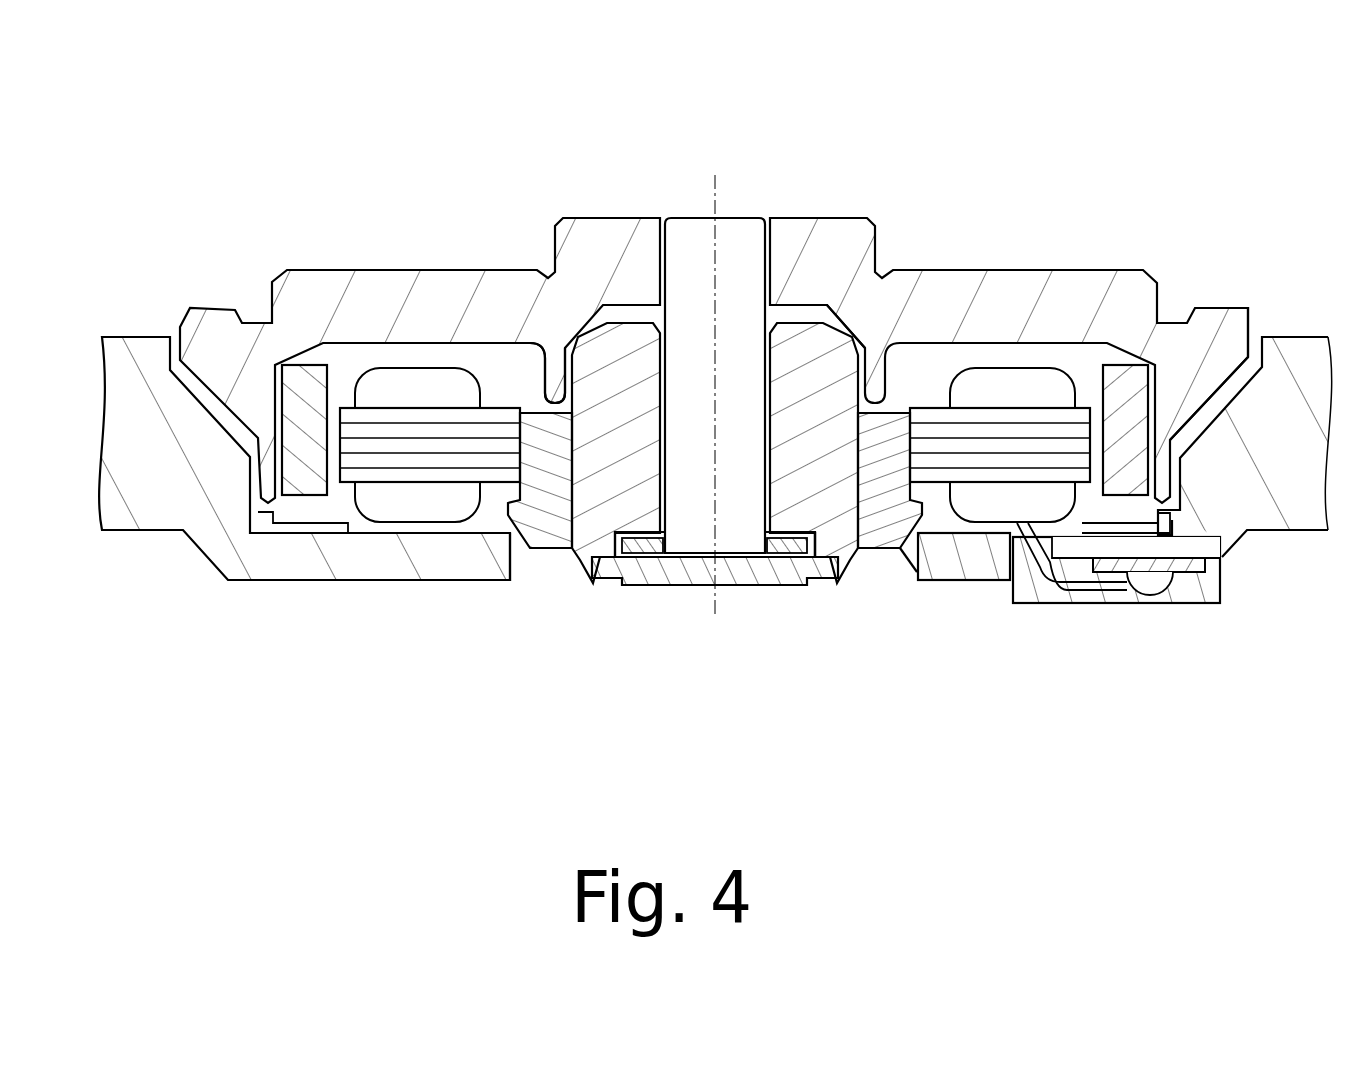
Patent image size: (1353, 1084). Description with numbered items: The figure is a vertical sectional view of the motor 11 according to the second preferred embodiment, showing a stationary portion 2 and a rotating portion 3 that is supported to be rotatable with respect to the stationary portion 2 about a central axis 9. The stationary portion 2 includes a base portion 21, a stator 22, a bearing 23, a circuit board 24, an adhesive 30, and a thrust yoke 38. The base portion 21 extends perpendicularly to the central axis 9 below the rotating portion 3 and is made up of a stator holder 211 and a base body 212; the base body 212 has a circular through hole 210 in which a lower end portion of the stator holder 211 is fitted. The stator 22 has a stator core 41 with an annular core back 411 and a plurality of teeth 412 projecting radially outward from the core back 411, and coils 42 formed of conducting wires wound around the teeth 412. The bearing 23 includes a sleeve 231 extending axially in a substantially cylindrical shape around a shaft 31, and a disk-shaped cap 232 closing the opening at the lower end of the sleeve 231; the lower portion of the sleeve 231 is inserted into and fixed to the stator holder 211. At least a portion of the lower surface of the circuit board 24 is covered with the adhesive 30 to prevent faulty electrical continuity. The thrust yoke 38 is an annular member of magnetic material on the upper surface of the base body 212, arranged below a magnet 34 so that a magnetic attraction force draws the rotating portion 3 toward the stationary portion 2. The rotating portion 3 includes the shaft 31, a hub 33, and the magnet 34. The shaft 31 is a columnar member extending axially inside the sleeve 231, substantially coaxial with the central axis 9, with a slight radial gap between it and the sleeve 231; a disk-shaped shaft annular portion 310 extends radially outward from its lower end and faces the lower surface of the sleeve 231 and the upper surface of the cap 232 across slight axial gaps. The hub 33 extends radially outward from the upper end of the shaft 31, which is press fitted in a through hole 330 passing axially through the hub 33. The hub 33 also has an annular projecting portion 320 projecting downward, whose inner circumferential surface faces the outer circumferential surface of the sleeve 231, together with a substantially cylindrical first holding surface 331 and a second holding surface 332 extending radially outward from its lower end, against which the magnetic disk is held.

The motor 11 is at (967, 163).
The stationary portion 2 is at (715, 545).
The base portion 21 is at (860, 567).
The stator holder 211 is at (890, 542).
The base body 212 is at (935, 548).
The stator 22 is at (710, 565).
The bearing 23 is at (712, 626).
The sleeve 231 is at (600, 562).
The cap 232 is at (650, 560).
The circuit board 24 is at (1193, 565).
The through hole 210 is at (521, 576).
The rotating portion 3 is at (729, 303).
The adhesive 30 is at (1072, 623).
The shaft 31 is at (715, 403).
The shaft annular portion 310 is at (790, 552).
The annular projecting portion 320 is at (552, 372).
The hub 33 is at (380, 312).
The through hole 330 is at (734, 252).
The first holding surface 331 is at (1168, 352).
The second holding surface 332 is at (1213, 355).
The magnet 34 is at (300, 488).
The thrust yoke 38 is at (1157, 592).
The stator core 41 is at (715, 564).
The core back 411 is at (500, 470).
The teeth 412 is at (450, 470).
The coils 42 is at (380, 502).
The central axis 9 is at (712, 192).